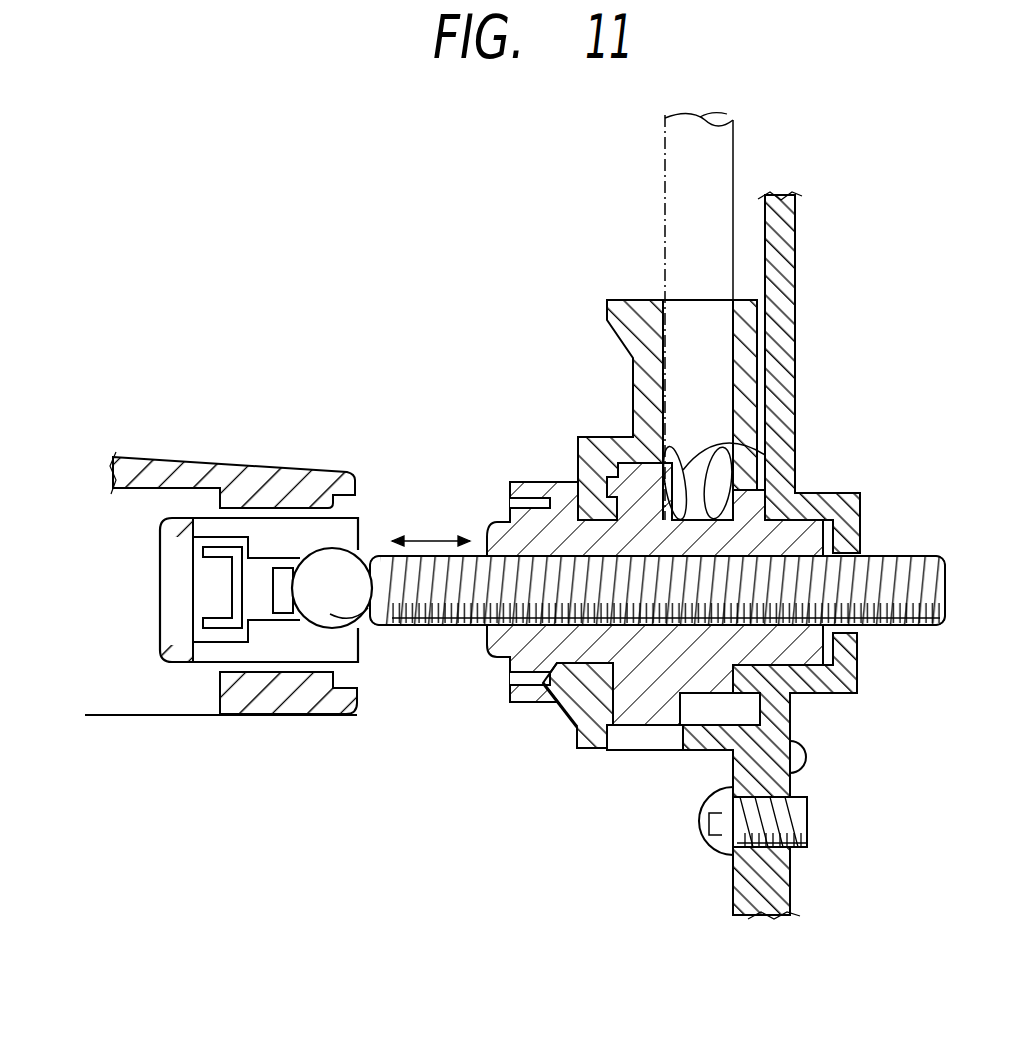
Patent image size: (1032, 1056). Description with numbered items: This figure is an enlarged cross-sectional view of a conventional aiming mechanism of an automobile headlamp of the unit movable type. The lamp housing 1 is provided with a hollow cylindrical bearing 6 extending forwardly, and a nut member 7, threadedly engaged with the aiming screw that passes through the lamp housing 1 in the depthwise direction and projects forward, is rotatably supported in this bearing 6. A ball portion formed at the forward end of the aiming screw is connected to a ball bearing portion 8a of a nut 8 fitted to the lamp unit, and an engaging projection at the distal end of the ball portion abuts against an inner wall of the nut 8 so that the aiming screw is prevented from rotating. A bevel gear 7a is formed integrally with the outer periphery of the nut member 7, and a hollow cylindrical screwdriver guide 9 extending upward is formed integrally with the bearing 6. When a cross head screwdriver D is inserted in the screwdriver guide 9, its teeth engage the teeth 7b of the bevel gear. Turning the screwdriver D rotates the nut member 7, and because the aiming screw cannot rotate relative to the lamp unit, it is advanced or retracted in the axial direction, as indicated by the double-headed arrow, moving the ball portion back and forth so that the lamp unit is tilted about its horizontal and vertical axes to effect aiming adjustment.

The lamp housing 1 is at (797, 258).
The bearing 6 is at (580, 433).
The nut member 7 is at (581, 635).
The bevel gear 7a is at (643, 715).
The teeth of the bevel gear 7b is at (745, 460).
The nut 8 is at (160, 578).
The ball bearing portion 8a is at (343, 545).
The screwdriver guide 9 is at (636, 385).
The cross head screwdriver D is at (664, 183).